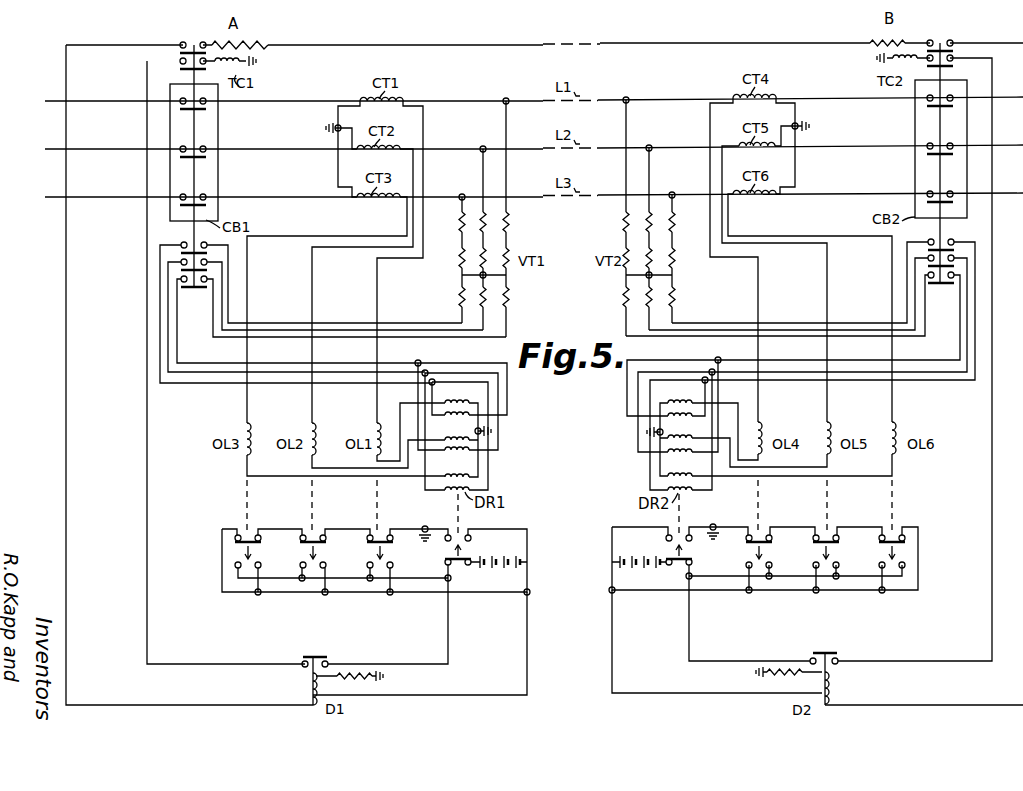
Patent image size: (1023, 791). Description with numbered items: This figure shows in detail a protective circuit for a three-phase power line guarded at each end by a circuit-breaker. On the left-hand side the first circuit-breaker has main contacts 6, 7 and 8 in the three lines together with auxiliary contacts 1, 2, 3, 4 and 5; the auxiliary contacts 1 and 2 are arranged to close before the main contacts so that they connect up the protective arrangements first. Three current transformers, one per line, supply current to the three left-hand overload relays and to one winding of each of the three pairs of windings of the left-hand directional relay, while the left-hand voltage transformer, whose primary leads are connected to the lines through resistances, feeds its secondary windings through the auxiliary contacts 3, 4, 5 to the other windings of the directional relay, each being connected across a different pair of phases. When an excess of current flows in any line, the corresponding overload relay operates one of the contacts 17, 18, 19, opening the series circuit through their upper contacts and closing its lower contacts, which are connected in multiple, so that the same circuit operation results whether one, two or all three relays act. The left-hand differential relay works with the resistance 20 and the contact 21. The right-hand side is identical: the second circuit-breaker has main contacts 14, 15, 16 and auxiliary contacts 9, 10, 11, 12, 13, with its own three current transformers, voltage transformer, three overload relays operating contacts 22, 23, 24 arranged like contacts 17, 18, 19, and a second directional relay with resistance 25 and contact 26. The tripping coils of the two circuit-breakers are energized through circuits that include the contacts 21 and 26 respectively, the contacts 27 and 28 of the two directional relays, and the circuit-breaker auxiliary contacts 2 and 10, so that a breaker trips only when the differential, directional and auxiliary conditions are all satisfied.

The auxiliary contact 1 is at (183, 44).
The auxiliary contact 2 is at (181, 65).
The auxiliary contact 3 is at (205, 247).
The auxiliary contact 4 is at (205, 264).
The auxiliary contact 5 is at (200, 284).
The main contact 6 is at (203, 113).
The main contact 7 is at (203, 160).
The main contact 8 is at (204, 207).
The auxiliary contact 9 is at (943, 43).
The auxiliary contact 10 is at (951, 60).
The auxiliary contact 11 is at (953, 243).
The auxiliary contact 12 is at (951, 260).
The auxiliary contact 13 is at (950, 281).
The main contact 14 is at (947, 110).
The main contact 15 is at (947, 157).
The main contact 16 is at (949, 205).
The overload relay contact 17 is at (385, 544).
The overload relay contact 18 is at (320, 544).
The overload relay contact 19 is at (253, 544).
The resistance 20 is at (373, 680).
The contact 21 is at (303, 662).
The overload relay contact 22 is at (748, 544).
The overload relay contact 23 is at (815, 544).
The overload relay contact 24 is at (882, 542).
The resistance 25 is at (794, 678).
The contact 26 is at (837, 658).
The directional relay contact 27 is at (465, 557).
The directional relay contact 28 is at (668, 558).